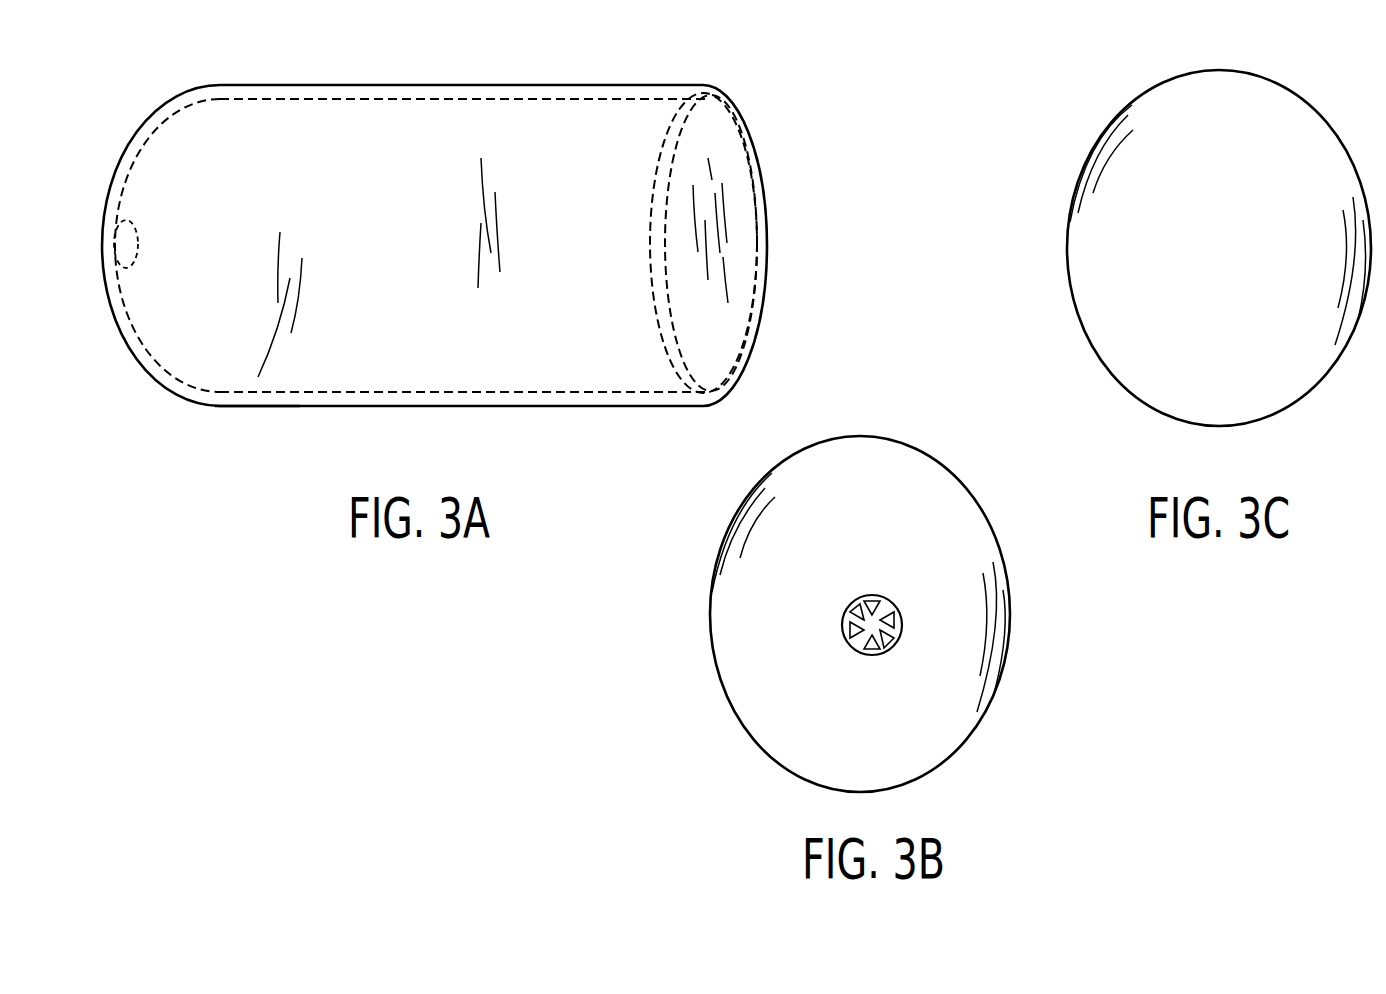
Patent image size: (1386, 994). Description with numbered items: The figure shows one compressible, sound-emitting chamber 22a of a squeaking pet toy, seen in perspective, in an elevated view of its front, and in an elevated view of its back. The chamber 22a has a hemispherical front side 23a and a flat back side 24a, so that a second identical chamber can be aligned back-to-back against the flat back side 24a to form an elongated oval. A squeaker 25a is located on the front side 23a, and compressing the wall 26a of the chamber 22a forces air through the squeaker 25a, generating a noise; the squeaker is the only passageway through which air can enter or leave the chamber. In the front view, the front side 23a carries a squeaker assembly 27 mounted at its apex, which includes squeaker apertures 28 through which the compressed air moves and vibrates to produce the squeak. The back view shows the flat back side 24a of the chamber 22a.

In FIG. 3A, the compressible, sound-emitting chamber 22a is at (557, 378).
In FIG. 3B, the compressible, sound-emitting chamber 22a is at (975, 738).
In FIG. 3C, the compressible, sound-emitting chamber 22a is at (1336, 372).
In FIG. 3A, the hemispherical front side 23a is at (165, 138).
In FIG. 3B, the hemispherical front side 23a is at (980, 543).
In FIG. 3A, the flat back side 24a is at (732, 157).
In FIG. 3C, the flat back side 24a is at (1148, 98).
In FIG. 3A, the squeaker 25a is at (118, 238).
In FIG. 3A, the wall 26a is at (228, 407).
In FIG. 3B, the squeaker assembly 27 is at (858, 603).
In FIG. 3B, the squeaker apertures 28 is at (866, 652).